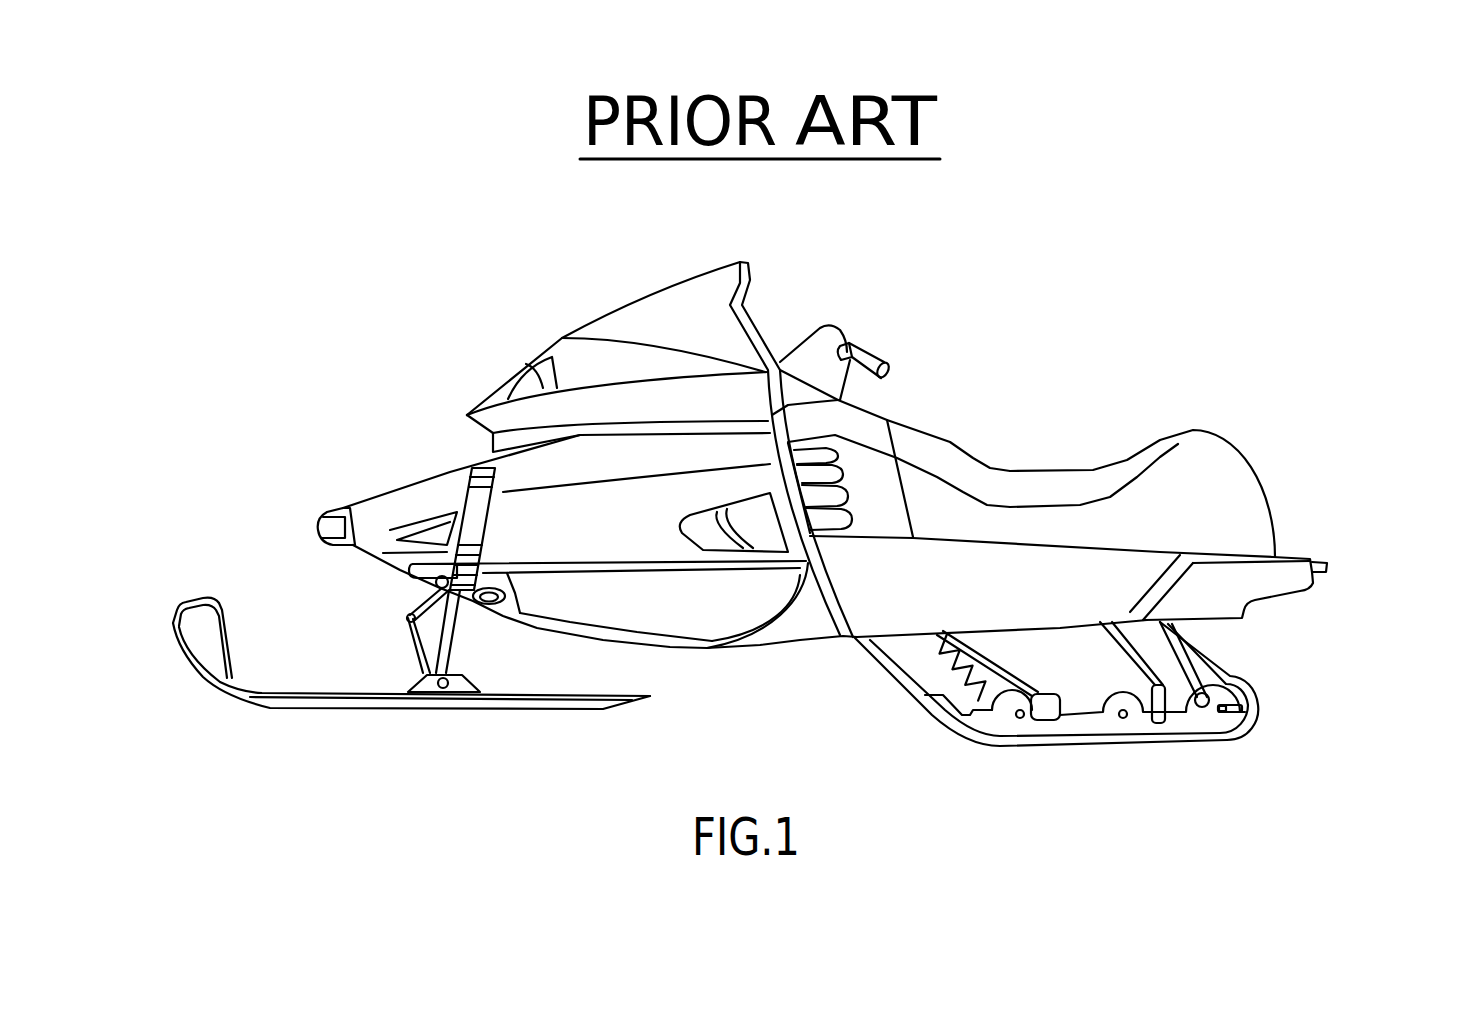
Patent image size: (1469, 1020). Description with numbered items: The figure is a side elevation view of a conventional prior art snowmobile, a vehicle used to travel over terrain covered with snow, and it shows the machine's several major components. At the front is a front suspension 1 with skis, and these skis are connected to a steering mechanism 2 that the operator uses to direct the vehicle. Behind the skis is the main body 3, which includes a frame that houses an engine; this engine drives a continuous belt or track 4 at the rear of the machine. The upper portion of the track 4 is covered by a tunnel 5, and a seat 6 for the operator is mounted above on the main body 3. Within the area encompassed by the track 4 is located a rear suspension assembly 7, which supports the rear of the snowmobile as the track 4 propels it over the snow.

The front suspension 1 is at (282, 710).
The steering mechanism 2 is at (858, 345).
The main body 3 is at (450, 470).
The track 4 is at (1250, 737).
The tunnel 5 is at (1035, 592).
The seat 6 is at (995, 487).
The rear suspension assembly 7 is at (1311, 640).